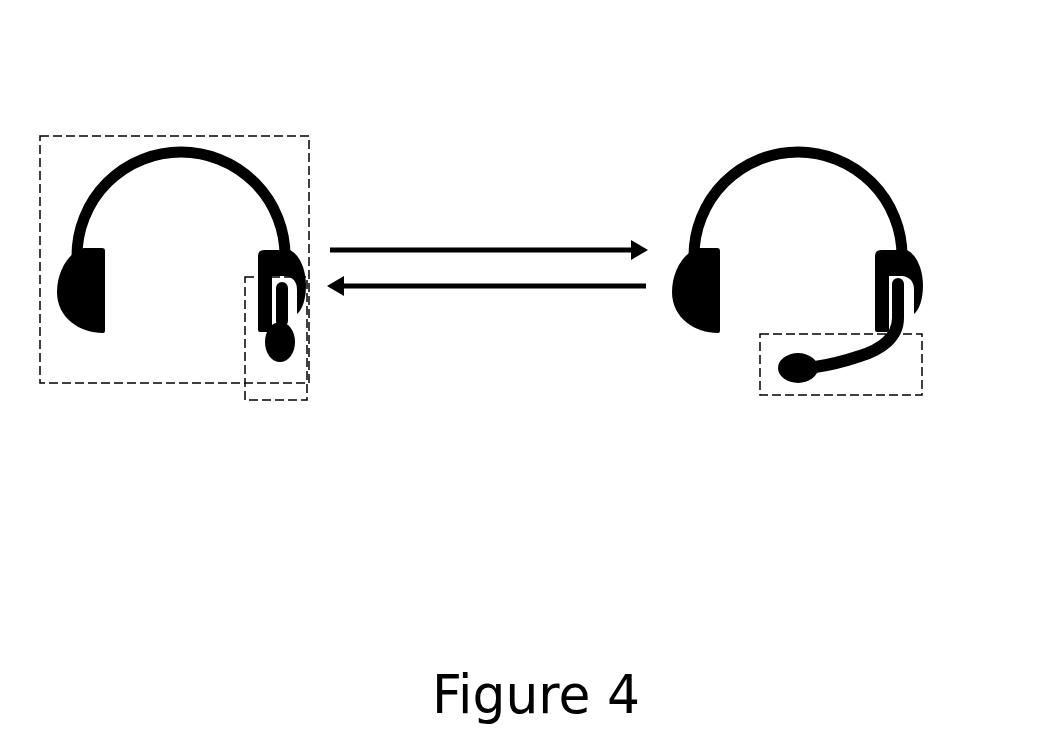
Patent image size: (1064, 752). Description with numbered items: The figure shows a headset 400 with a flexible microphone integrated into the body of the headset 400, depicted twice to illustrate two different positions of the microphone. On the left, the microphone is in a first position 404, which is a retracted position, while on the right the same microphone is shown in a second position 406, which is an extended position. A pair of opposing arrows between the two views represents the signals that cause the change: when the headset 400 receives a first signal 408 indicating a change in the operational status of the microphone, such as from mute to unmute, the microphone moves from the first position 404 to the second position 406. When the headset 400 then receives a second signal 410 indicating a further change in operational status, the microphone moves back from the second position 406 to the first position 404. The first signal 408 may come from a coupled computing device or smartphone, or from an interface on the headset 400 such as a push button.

The headset 400 is at (192, 136).
The first position 404 is at (322, 391).
The second position 406 is at (935, 391).
The first signal 408 is at (522, 248).
The second signal 410 is at (522, 290).